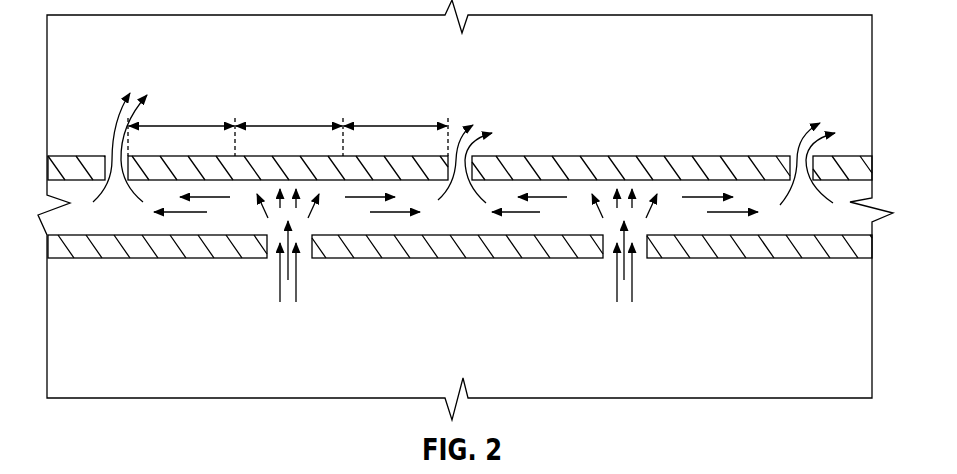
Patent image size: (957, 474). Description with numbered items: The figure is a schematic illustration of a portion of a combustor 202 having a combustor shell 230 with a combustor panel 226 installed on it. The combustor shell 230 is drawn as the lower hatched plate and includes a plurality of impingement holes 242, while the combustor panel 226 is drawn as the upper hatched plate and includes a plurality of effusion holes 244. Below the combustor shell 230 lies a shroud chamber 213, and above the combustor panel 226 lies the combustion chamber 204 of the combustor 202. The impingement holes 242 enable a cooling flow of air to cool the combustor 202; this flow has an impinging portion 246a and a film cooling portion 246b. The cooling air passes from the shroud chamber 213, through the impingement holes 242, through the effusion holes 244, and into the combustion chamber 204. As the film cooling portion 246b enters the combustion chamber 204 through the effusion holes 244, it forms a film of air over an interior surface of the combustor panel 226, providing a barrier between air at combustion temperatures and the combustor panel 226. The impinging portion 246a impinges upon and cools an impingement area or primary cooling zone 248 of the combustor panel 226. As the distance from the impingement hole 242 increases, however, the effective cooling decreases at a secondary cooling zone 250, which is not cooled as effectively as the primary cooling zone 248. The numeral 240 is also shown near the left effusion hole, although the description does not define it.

The combustor 202 is at (612, 95).
The combustion chamber 204 is at (480, 65).
The shroud chamber 213 is at (482, 365).
The combustor panel 226 is at (385, 156).
The combustor shell 230 is at (168, 247).
The outlet opening 240 is at (107, 153).
The impingement holes 242 is at (306, 263).
The effusion holes 244 is at (792, 153).
The impinging portion 246a is at (321, 334).
The film cooling portion 246b is at (172, 89).
The primary cooling zone 248 is at (292, 126).
The secondary cooling zone 250 is at (185, 126).